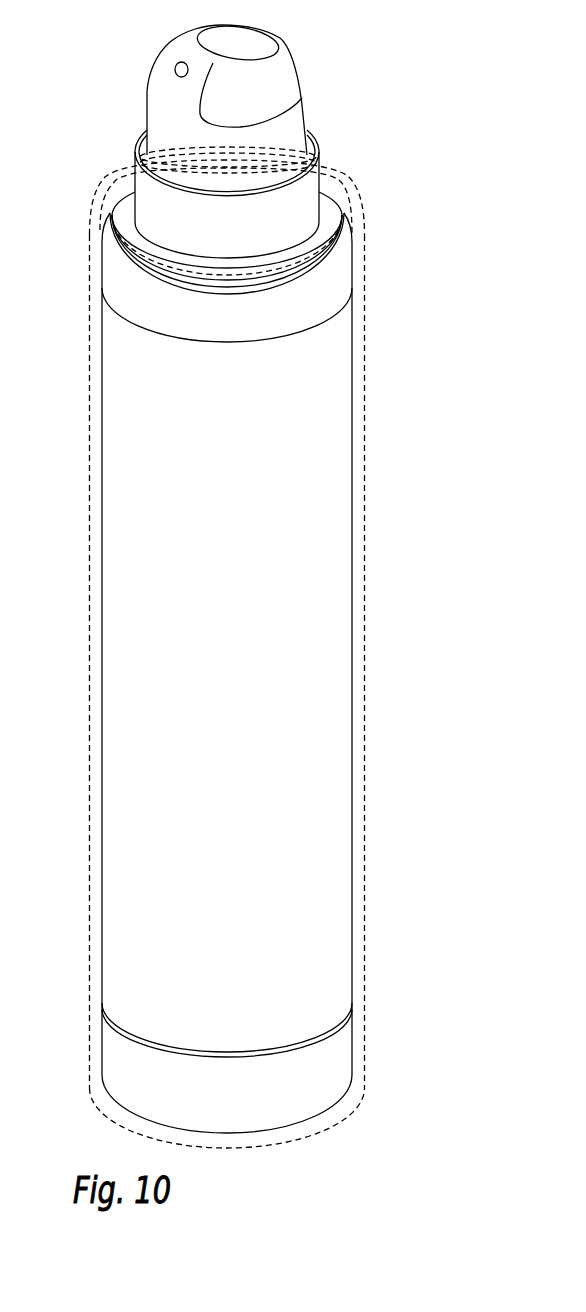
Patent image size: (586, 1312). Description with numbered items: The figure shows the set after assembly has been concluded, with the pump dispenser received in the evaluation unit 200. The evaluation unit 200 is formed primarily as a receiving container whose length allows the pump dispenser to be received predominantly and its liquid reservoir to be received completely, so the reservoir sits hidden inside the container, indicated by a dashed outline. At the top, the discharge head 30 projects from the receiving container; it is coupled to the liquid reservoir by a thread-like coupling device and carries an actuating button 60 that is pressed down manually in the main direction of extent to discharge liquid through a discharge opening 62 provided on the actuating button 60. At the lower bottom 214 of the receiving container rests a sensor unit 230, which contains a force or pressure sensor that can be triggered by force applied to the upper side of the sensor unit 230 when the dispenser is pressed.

The discharge head 30 is at (331, 153).
The actuating button 60 is at (146, 87).
The discharge opening 62 is at (178, 63).
The evaluation unit 200 is at (354, 402).
The lower bottom 214 is at (297, 1139).
The sensor unit 230 is at (123, 1053).